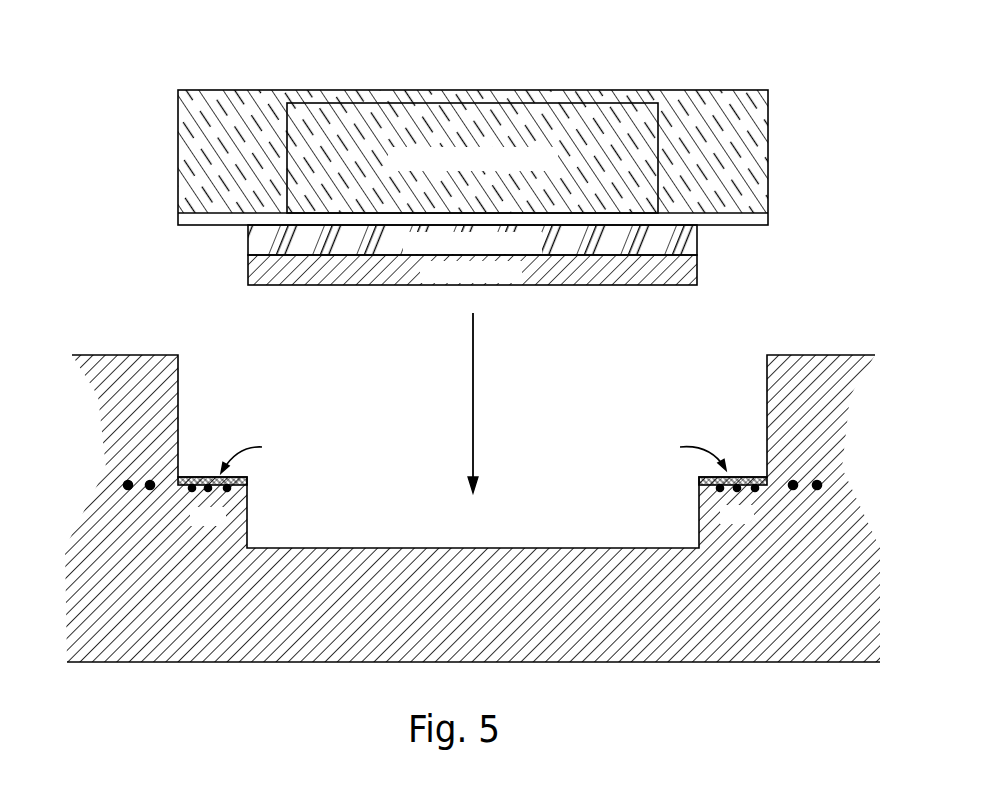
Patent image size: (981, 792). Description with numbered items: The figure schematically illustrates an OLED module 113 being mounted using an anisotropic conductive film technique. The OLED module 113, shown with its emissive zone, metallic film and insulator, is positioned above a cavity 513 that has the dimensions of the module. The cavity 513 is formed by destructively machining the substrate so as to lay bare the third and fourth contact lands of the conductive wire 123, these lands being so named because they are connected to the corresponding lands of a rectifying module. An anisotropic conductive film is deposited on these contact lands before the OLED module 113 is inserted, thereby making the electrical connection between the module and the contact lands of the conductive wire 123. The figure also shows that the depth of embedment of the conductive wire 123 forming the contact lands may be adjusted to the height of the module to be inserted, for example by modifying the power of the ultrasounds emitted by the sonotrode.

The OLED module 113 is at (758, 153).
The cavity 513 is at (347, 405).
The conductive wire 123 is at (124, 485).